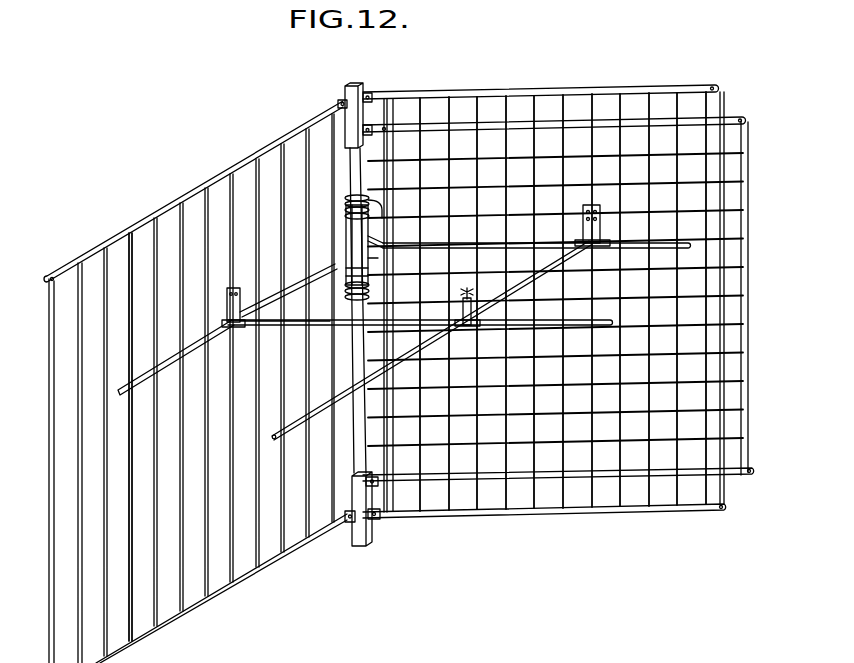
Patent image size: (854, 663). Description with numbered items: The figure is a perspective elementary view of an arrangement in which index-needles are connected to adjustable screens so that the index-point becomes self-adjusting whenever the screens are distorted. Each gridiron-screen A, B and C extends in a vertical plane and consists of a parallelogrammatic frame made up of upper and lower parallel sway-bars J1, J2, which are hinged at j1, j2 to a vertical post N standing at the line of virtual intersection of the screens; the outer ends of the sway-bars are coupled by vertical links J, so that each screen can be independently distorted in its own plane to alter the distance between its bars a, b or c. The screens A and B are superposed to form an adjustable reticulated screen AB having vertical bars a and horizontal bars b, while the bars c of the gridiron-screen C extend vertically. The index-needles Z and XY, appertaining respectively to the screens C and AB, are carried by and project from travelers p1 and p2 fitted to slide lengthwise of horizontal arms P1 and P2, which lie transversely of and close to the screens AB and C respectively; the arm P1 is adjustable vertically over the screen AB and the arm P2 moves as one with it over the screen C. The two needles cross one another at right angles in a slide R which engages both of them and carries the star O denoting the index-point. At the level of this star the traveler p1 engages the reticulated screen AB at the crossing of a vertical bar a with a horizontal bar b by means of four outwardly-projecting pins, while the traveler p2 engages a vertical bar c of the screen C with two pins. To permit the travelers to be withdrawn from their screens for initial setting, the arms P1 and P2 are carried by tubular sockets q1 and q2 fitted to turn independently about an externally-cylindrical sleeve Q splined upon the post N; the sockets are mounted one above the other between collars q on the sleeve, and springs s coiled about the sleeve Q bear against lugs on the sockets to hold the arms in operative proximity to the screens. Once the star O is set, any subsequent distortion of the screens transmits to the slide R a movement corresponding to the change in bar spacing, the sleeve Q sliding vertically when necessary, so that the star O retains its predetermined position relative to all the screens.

The gridiron-screen C is at (200, 388).
The bars of screen C c is at (161, 571).
The vertical links J is at (48, 481).
The upper sway-bar J1 is at (174, 204).
The lower sway-bar J2 is at (523, 478).
The vertical post N is at (353, 371).
The gridiron-screen A is at (541, 82).
The reticulated screen AB is at (566, 297).
The gridiron-screen B is at (755, 298).
The vertical bars a is at (672, 401).
The horizontal bars b is at (563, 301).
The hinge j1 is at (365, 101).
The hinge j2 is at (369, 484).
The sleeve Q is at (347, 200).
The springs s is at (346, 210).
The collars q is at (346, 237).
The tubular socket q1 is at (346, 262).
The tubular socket q2 is at (370, 263).
The horizontal arm P1 is at (668, 243).
The traveler p1 is at (585, 214).
The horizontal arm P2 is at (152, 372).
The traveler p2 is at (228, 290).
The slide R is at (471, 328).
The index-needle Z is at (316, 326).
The star O is at (466, 290).
The index-needle XY is at (323, 412).